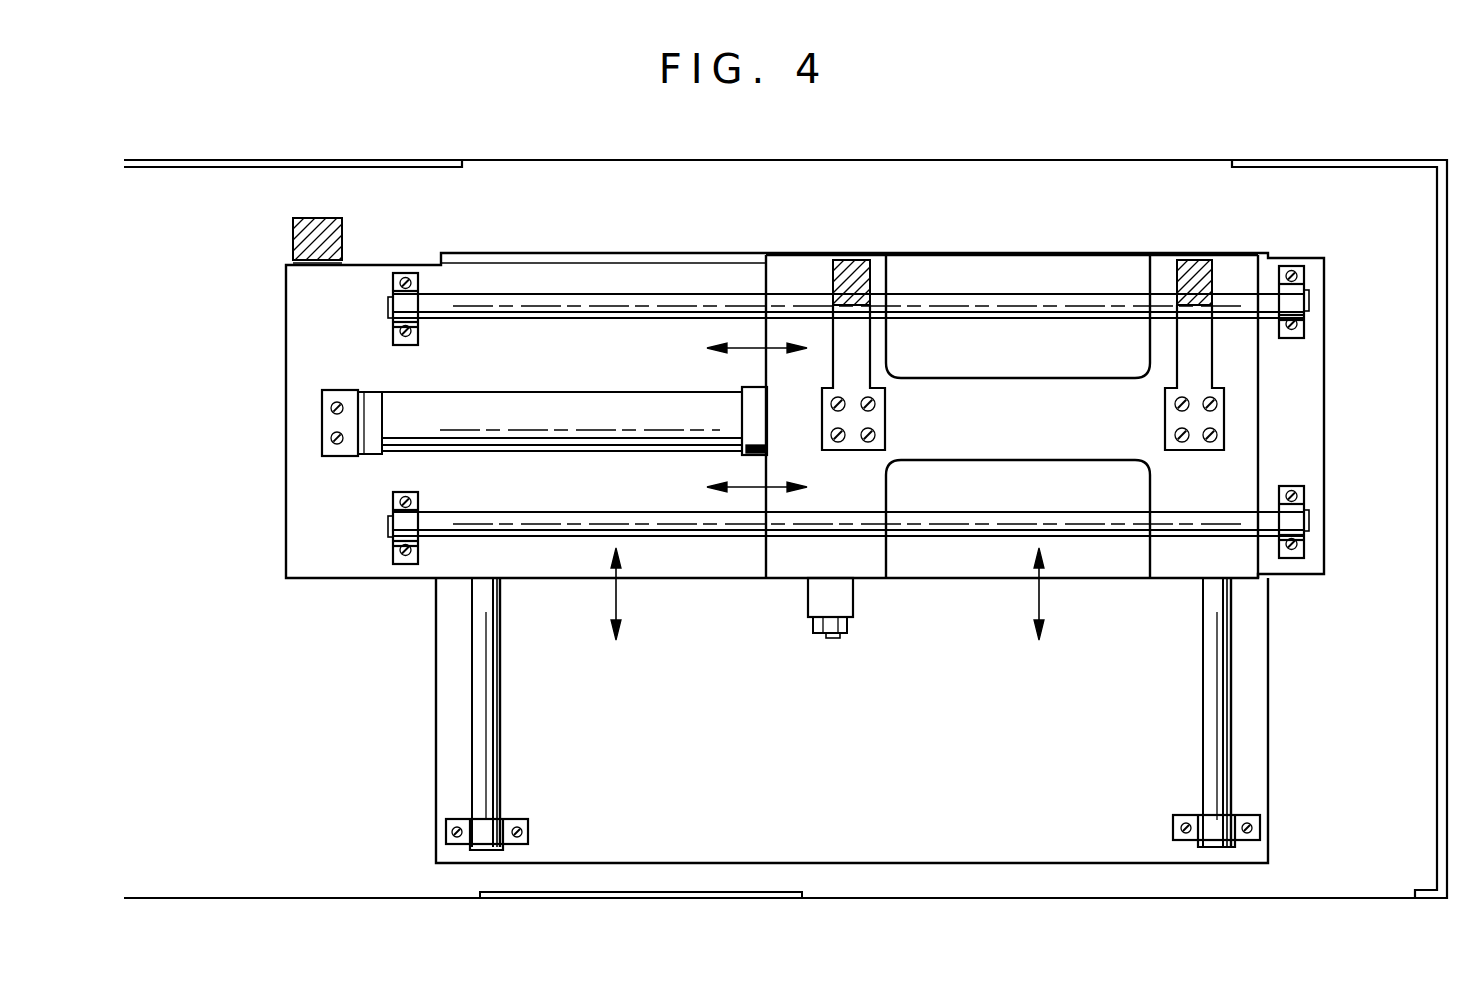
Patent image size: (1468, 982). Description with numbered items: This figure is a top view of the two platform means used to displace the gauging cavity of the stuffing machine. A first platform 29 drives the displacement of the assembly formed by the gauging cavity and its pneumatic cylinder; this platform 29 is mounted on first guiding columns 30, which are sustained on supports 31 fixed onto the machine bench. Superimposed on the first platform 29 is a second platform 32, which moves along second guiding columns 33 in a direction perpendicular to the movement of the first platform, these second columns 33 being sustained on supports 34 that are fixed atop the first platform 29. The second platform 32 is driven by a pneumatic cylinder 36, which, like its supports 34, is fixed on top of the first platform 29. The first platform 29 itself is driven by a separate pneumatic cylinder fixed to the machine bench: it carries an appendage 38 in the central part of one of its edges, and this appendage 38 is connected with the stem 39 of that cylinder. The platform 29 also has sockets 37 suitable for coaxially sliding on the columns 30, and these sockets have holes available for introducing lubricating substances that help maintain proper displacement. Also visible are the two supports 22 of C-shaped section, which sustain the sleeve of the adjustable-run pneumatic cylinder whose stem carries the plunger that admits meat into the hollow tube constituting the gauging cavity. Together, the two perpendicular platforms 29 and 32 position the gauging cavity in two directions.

The supports of the C shaped section 22 is at (862, 350).
The first platform 29 is at (1024, 395).
The first guiding columns 30 is at (487, 698).
The supports 31 is at (490, 806).
The second platform 32 is at (450, 710).
The second guiding columns 33 is at (606, 306).
The supports 34 is at (400, 304).
The pneumatic cylinder 36 is at (493, 410).
The sockets 37 is at (302, 463).
The appendage 38 is at (820, 596).
The stem 39 is at (832, 638).